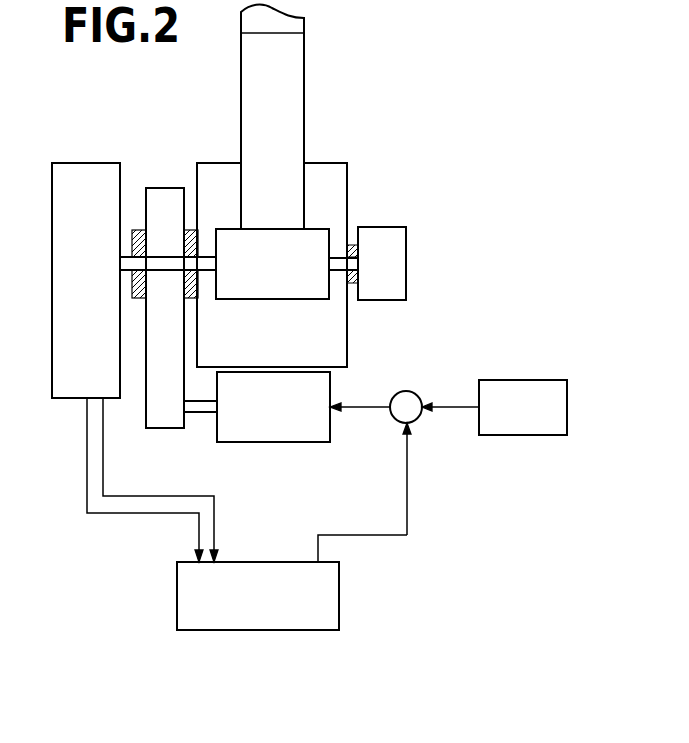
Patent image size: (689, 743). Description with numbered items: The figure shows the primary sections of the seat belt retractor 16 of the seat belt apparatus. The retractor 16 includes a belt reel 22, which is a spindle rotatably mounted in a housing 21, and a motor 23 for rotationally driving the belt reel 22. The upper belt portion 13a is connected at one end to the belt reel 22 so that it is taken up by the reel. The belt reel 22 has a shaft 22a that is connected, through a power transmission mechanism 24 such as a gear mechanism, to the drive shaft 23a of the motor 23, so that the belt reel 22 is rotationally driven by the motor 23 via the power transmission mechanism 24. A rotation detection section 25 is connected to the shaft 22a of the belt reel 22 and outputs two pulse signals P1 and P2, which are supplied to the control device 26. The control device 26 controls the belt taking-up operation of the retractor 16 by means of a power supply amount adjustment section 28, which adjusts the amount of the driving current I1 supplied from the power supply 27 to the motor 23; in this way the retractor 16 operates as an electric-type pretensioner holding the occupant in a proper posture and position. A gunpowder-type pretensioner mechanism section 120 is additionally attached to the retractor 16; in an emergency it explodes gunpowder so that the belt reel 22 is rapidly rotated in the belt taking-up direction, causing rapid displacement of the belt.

The upper belt portion 13a is at (288, 77).
The seat belt retractor 16 is at (440, 154).
The housing 21 is at (347, 183).
The belt reel 22 is at (320, 240).
The shaft 22a is at (210, 250).
The motor 23 is at (273, 442).
The drive shaft 23a is at (202, 408).
The power transmission mechanism 24 is at (153, 197).
The rotation detection section 25 is at (70, 163).
The control device 26 is at (339, 585).
The power supply 27 is at (549, 380).
The power supply amount adjustment section 28 is at (412, 391).
The gunpowder-type pretensioner mechanism section 120 is at (397, 262).
The driving current I1 is at (357, 407).
The pulse signal P1 is at (214, 536).
The pulse signal P2 is at (199, 536).